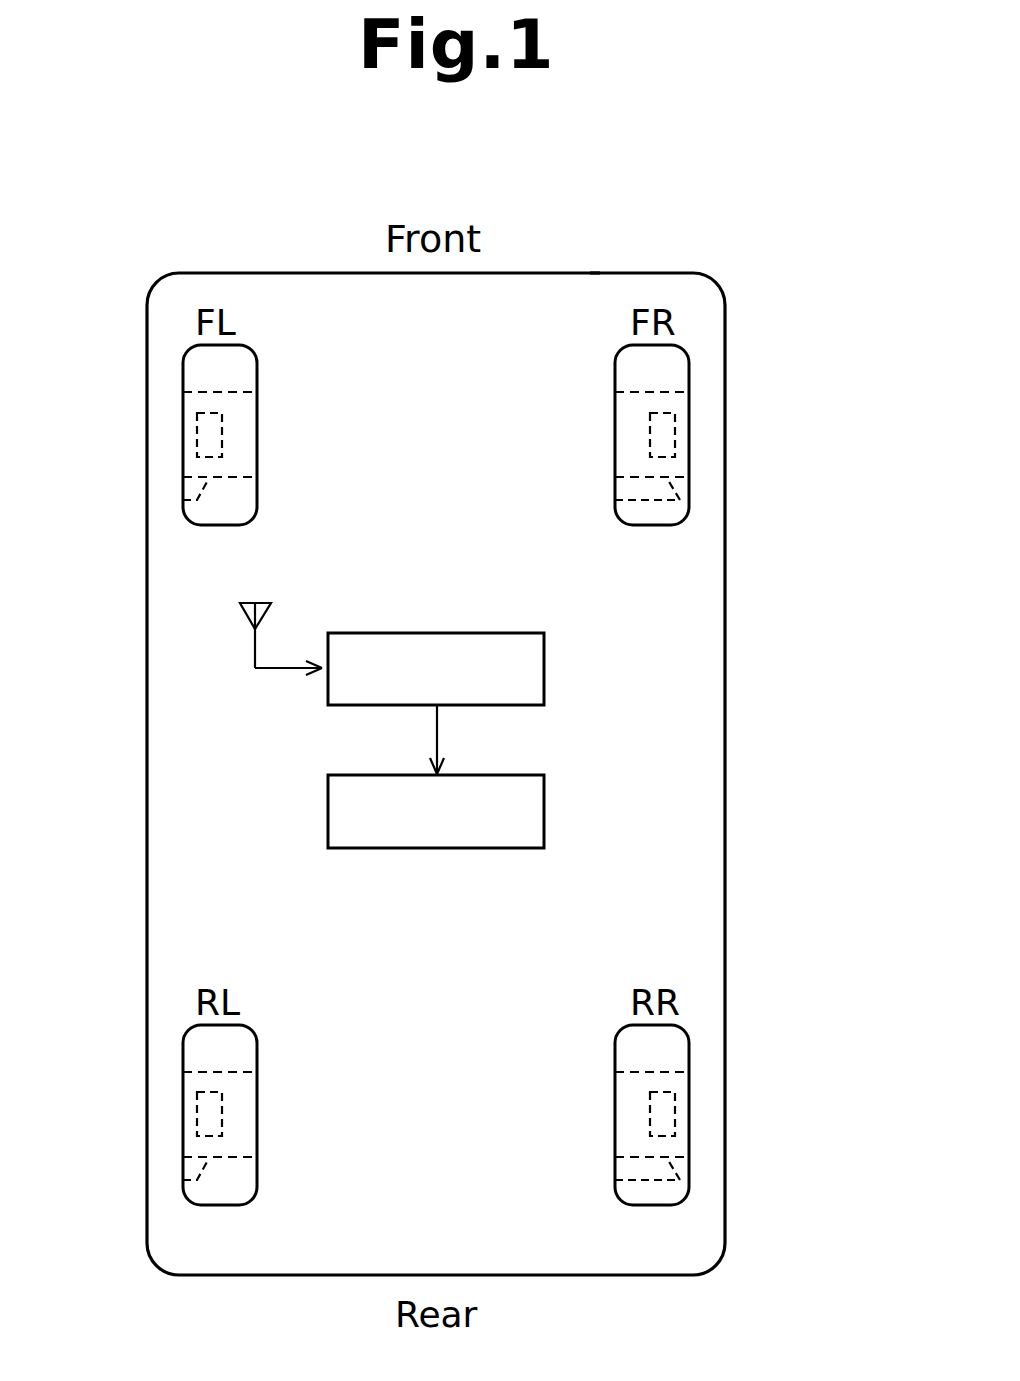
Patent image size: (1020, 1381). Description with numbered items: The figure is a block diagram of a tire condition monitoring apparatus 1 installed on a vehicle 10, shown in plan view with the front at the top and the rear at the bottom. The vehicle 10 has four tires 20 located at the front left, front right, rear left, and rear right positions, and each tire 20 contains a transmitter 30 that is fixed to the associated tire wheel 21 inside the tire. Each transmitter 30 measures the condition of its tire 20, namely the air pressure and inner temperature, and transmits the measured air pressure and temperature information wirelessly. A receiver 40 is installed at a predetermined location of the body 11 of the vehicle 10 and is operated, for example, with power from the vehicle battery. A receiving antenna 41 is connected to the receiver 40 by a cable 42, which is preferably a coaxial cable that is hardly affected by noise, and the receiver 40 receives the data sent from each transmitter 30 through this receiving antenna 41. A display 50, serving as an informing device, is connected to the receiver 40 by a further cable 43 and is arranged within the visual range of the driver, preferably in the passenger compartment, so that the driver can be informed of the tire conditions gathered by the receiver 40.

The tire condition monitoring apparatus 1 is at (794, 205).
The vehicle 10 is at (330, 273).
The body 11 is at (594, 273).
The tire 20 is at (197, 372).
The tire wheel 21 is at (183, 500).
The transmitter 30 is at (197, 432).
The receiver 40 is at (545, 668).
The receiving antenna 41 is at (242, 614).
The cable 42 is at (272, 668).
The cable 43 is at (438, 740).
The display 50 is at (545, 810).